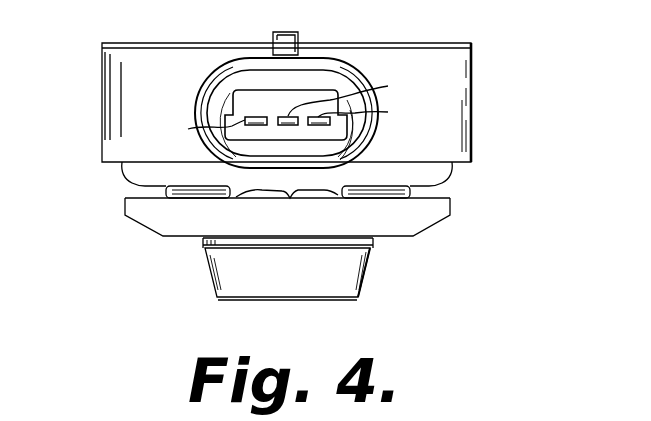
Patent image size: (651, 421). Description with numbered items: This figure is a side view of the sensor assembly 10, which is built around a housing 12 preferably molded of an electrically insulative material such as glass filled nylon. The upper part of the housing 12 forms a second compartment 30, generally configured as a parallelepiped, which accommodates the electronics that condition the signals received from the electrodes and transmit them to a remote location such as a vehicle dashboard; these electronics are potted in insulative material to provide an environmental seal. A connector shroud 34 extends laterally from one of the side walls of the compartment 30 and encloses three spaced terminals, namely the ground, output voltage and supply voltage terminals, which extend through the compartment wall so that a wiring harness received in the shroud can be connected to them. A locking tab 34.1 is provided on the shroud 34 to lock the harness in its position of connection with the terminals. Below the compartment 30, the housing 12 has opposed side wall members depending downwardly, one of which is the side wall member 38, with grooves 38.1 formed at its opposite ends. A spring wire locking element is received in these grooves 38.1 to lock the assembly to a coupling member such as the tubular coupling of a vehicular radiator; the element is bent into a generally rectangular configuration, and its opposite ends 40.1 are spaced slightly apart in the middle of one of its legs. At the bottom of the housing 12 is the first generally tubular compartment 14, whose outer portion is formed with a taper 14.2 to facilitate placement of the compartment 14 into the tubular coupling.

The sensor assembly 10 is at (299, 165).
The housing 12 is at (473, 135).
The first generally tubular compartment 14 is at (336, 297).
The taper 14.2 is at (364, 280).
The second compartment 30 is at (471, 43).
The connector shroud 34 is at (368, 141).
The locking tab 34.1 is at (292, 34).
The side wall member 38 is at (425, 218).
The grooves 38.1 is at (130, 193).
The opposite ends of locking element 40.1 is at (287, 206).